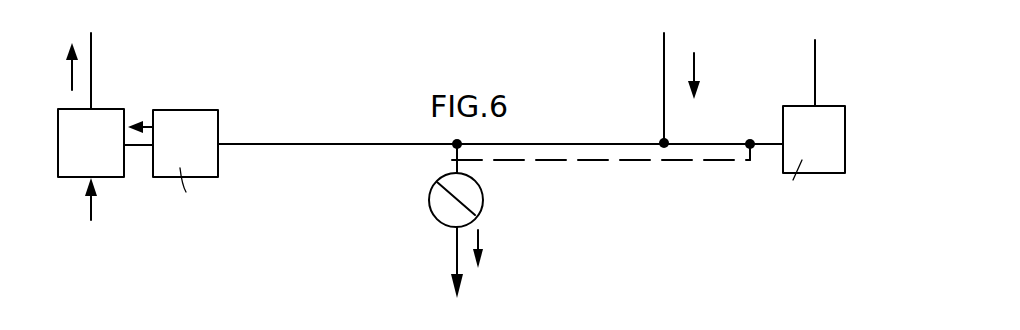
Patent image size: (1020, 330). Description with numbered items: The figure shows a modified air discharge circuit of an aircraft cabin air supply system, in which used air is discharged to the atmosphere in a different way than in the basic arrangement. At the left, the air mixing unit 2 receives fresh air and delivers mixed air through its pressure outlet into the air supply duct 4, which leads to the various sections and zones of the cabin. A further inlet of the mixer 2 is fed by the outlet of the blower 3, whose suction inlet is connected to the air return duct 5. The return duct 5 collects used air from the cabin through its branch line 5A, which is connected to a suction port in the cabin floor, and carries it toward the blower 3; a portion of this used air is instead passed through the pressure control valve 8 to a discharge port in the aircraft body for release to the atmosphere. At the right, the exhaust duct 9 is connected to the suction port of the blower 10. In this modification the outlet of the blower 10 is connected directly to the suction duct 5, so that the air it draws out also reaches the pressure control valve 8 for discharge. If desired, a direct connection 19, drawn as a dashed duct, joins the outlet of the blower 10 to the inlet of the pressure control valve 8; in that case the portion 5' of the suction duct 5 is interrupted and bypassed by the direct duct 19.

The air mixing unit 2 is at (98, 152).
The blower 3 is at (193, 110).
The air supply duct 4 is at (91, 68).
The air return duct 5 is at (441, 128).
The branch line 5A is at (662, 45).
The portion of the suction duct 5' is at (723, 128).
The pressure control valve 8 is at (483, 193).
The exhaust duct 9 is at (815, 56).
The blower 10 is at (840, 133).
The direct connection 19 is at (615, 162).